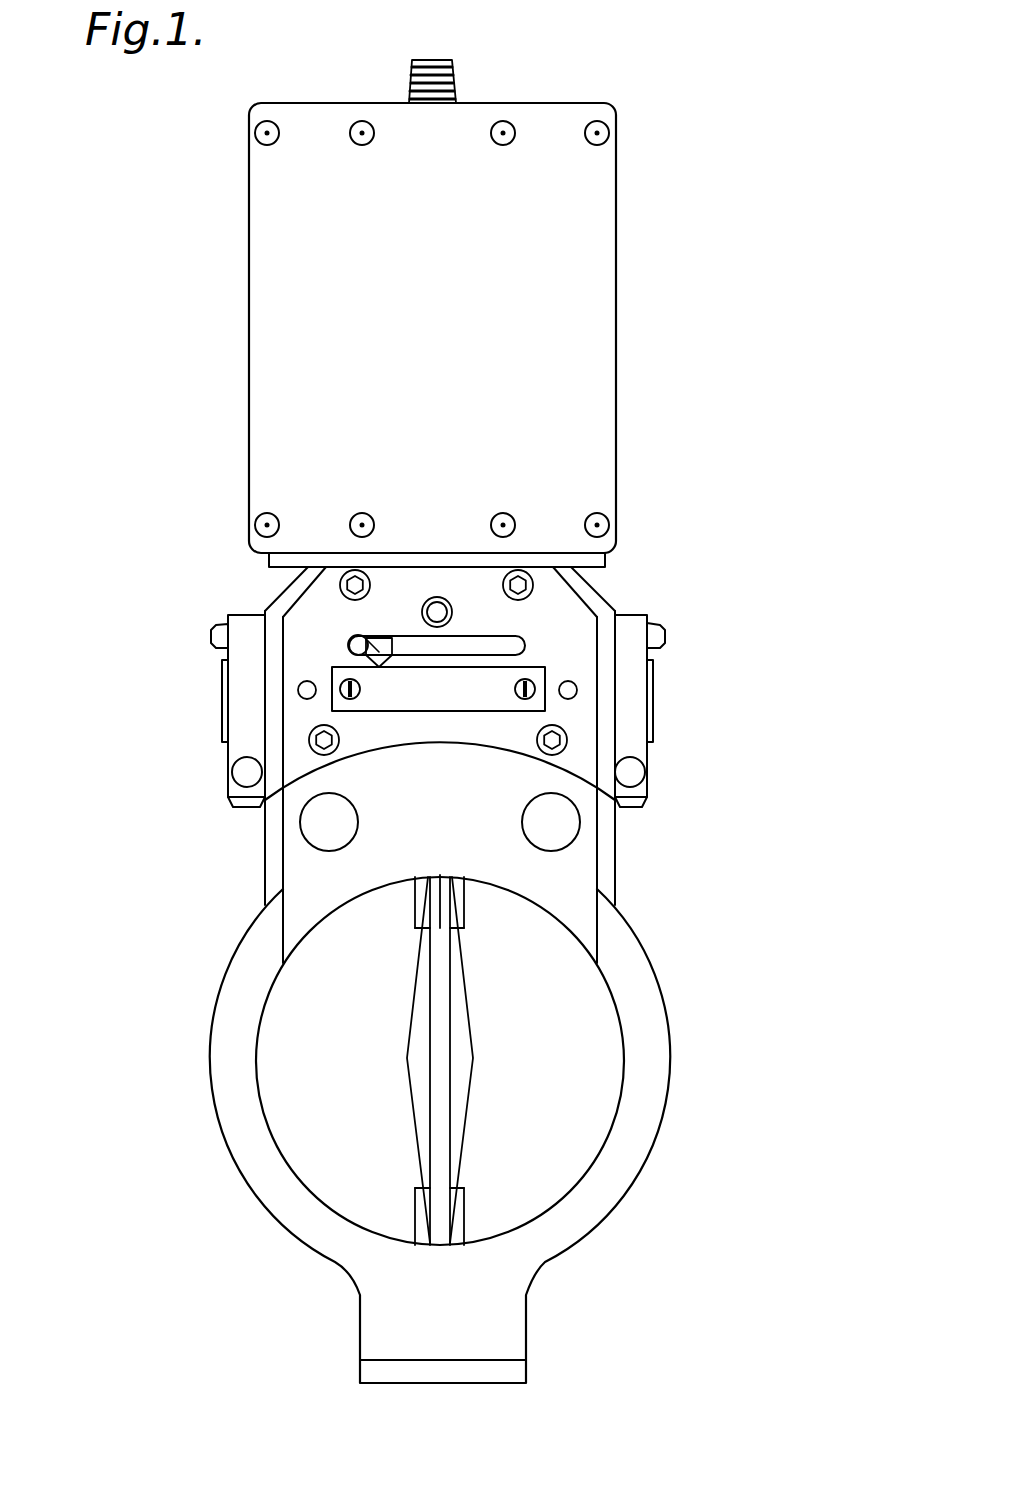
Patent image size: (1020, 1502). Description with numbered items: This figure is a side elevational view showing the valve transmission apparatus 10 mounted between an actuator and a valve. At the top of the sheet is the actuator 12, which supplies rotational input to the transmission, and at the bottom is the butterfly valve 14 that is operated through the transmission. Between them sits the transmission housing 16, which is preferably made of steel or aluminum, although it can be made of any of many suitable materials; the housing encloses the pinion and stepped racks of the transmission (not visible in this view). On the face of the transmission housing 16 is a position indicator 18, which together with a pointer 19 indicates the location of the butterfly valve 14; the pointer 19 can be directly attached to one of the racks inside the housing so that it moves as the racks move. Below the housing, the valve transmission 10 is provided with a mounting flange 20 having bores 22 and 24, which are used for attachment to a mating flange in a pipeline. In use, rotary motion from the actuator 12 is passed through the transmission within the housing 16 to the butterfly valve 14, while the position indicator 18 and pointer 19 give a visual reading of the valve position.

The valve transmission apparatus 10 is at (688, 684).
The actuator 12 is at (212, 297).
The butterfly valve 14 is at (469, 1042).
The transmission housing 16 is at (557, 632).
The position indicator 18 is at (453, 695).
The pointer 19 is at (362, 640).
The mounting flange 20 is at (460, 849).
The bore 22 is at (561, 823).
The bore 24 is at (316, 824).